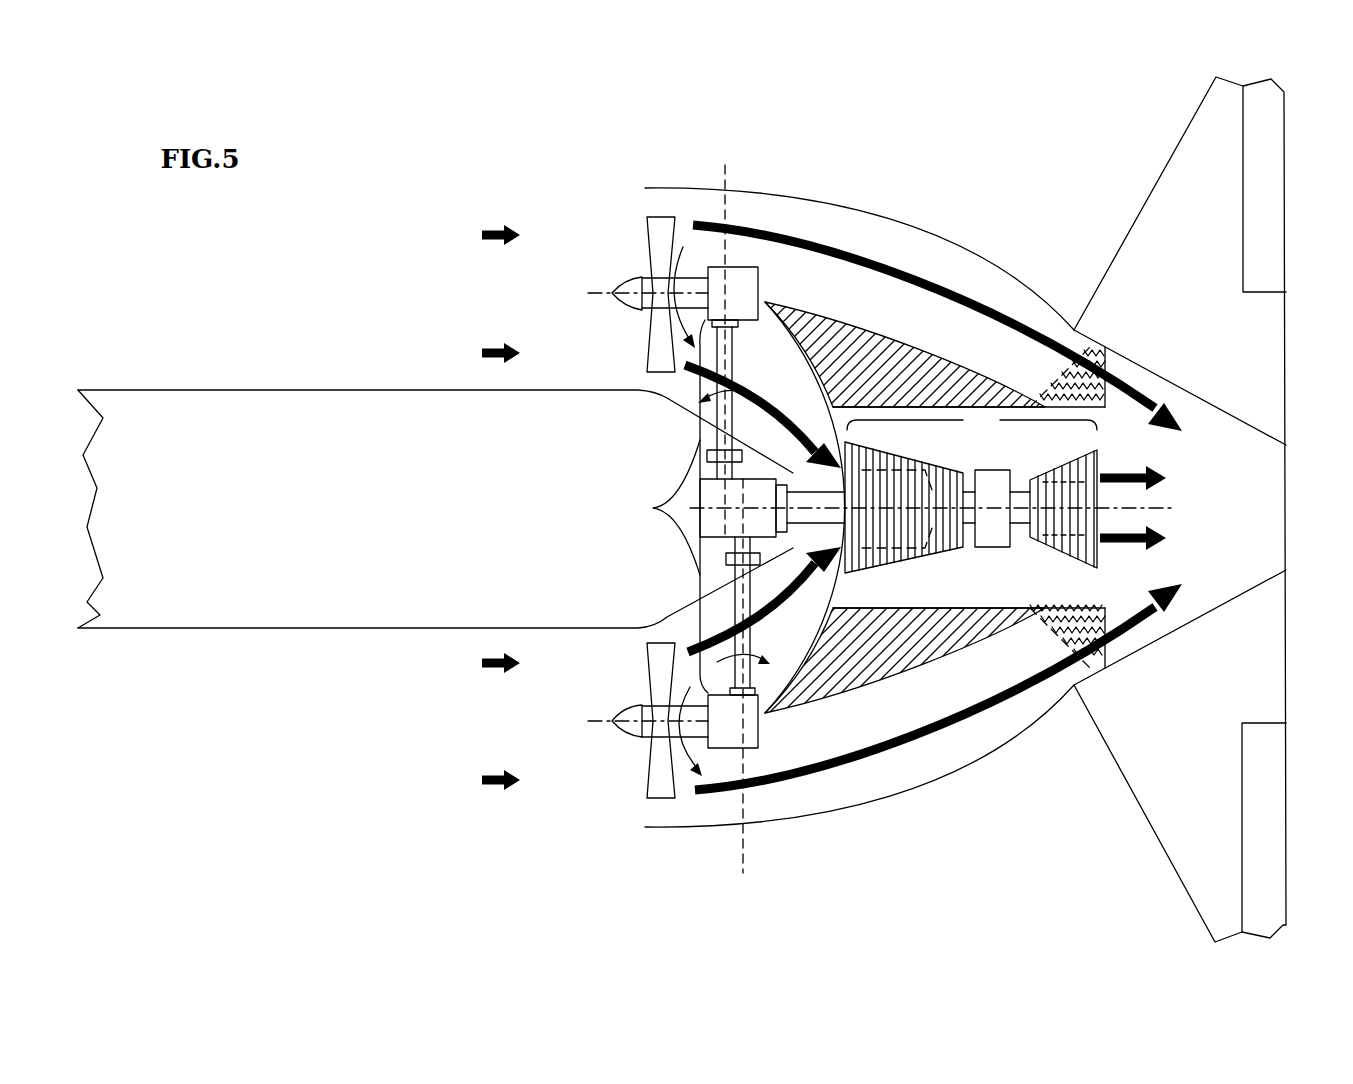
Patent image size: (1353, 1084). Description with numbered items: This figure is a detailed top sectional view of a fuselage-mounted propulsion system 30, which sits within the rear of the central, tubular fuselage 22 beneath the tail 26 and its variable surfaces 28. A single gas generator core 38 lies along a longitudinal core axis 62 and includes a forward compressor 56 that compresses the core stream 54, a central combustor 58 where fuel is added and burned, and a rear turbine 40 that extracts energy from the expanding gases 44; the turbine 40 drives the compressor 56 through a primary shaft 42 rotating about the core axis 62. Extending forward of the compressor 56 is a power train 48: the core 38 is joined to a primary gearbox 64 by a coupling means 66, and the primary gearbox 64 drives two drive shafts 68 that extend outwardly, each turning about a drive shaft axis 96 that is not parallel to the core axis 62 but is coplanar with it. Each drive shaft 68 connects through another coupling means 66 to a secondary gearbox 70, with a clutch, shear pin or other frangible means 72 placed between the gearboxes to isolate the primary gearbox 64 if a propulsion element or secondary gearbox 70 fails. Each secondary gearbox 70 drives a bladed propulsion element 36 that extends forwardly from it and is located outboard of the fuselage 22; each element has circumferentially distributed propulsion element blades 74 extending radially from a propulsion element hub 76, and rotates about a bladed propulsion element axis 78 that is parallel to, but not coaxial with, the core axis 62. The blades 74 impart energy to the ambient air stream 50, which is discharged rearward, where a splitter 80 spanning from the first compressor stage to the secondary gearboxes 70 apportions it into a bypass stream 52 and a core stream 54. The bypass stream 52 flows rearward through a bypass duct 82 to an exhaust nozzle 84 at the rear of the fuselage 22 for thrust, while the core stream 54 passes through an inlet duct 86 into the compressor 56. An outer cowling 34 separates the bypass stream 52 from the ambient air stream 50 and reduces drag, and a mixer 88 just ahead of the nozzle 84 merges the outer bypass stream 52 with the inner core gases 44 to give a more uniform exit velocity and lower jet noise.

The fuselage 22 is at (435, 509).
The tail 26 is at (1195, 175).
The variable surfaces 28 is at (1277, 216).
The propulsion system 30 is at (982, 166).
The outer cowling 34 is at (855, 207).
The bladed propulsion element 36 is at (624, 510).
The gas generator core 38 is at (999, 506).
The turbine 40 is at (1065, 555).
The primary shaft 42 is at (1020, 498).
The expanding gases 44 is at (1131, 465).
The power train 48 is at (653, 508).
The ambient air stream 50 is at (502, 244).
The bypass stream 52 is at (880, 267).
The core stream 54 is at (775, 407).
The compressor 56 is at (880, 458).
The combustor 58 is at (986, 470).
The core axis 62 is at (1162, 505).
The primary gearbox 64 is at (738, 508).
The coupling means 66 is at (780, 516).
The drive shaft 68 is at (730, 345).
The secondary gearbox 70 is at (743, 283).
The frangible means 72 is at (707, 455).
The propulsion element blades 74 is at (655, 243).
The propulsion element hub 76 is at (643, 310).
The bladed propulsion element axis 78 is at (603, 230).
The splitter 80 is at (910, 507).
The bypass duct 82 is at (834, 503).
The exhaust nozzle 84 is at (1263, 507).
The inlet duct 86 is at (805, 507).
The mixer 88 is at (1060, 385).
The drive shaft axis 96 is at (727, 178).